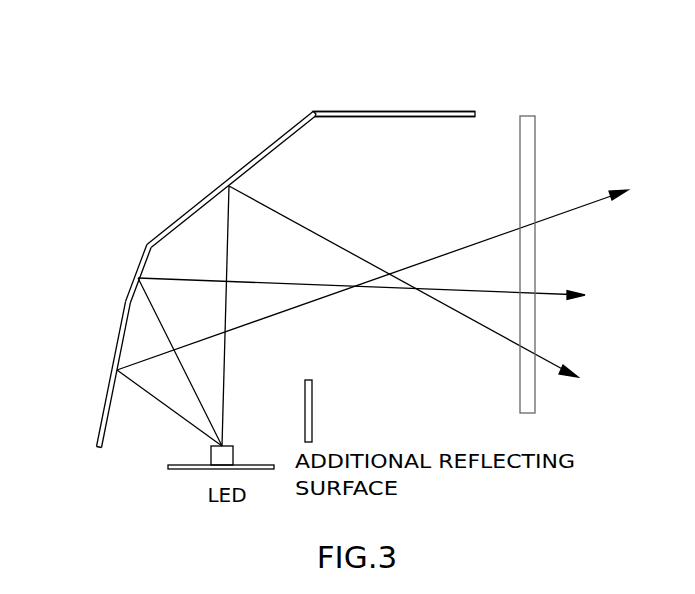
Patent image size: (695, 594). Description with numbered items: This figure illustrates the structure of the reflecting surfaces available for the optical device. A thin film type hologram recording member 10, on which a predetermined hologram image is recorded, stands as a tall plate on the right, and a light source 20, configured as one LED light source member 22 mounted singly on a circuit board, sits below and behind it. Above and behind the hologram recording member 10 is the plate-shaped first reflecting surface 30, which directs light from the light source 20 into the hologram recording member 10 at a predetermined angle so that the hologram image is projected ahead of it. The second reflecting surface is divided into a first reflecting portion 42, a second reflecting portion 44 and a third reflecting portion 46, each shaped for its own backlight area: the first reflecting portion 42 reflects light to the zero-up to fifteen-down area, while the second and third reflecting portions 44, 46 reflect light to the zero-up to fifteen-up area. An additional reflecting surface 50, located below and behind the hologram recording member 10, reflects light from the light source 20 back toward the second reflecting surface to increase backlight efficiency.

The hologram recording member 10 is at (532, 136).
The light source 20 is at (151, 468).
The light source member 22 is at (227, 445).
The first reflecting surface 30 is at (393, 112).
The first reflecting portion 42 is at (255, 160).
The second reflecting portion 44 is at (138, 278).
The third reflecting portion 46 is at (117, 345).
The additional reflecting surface 50 is at (309, 414).